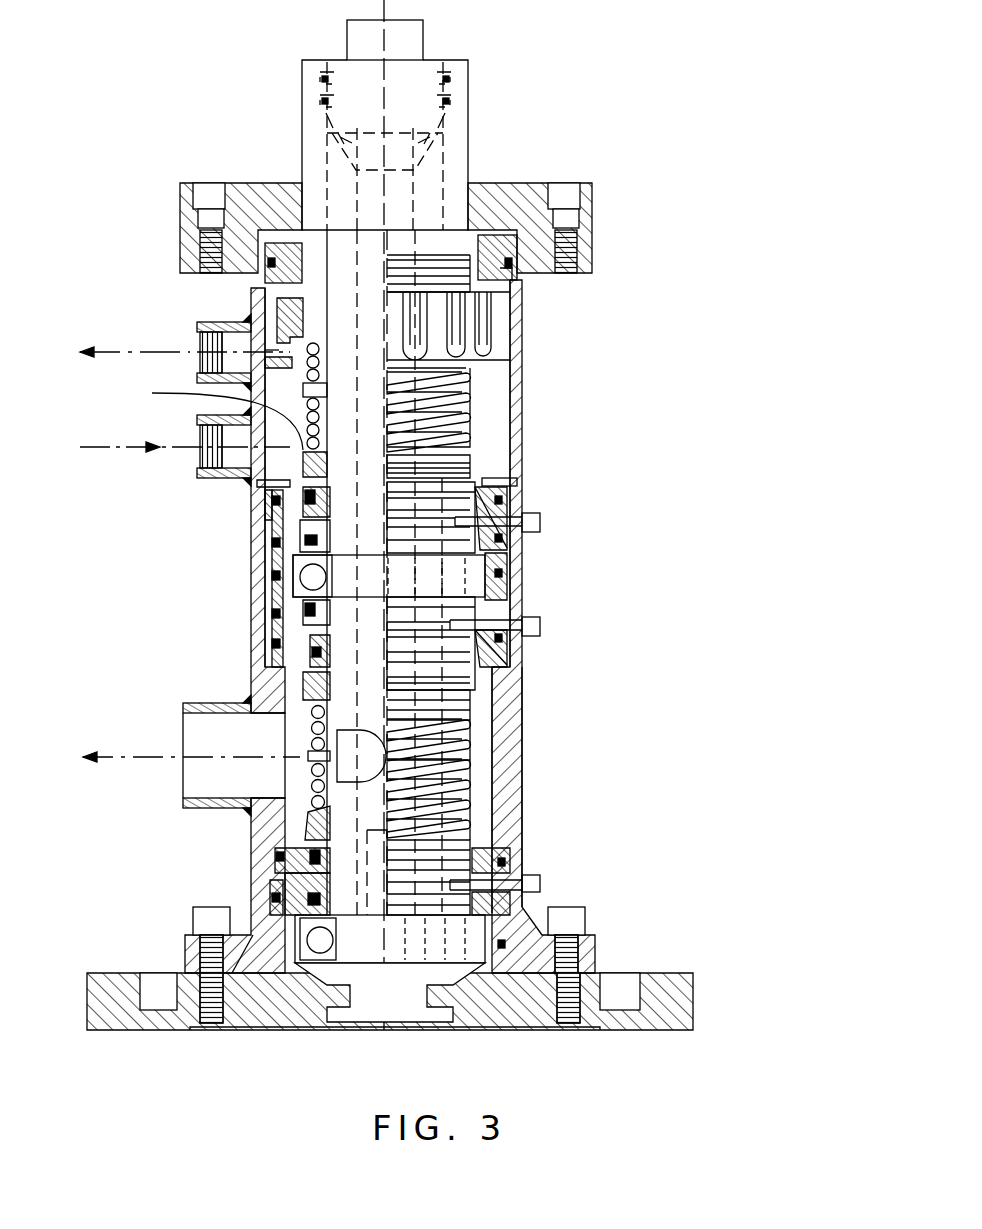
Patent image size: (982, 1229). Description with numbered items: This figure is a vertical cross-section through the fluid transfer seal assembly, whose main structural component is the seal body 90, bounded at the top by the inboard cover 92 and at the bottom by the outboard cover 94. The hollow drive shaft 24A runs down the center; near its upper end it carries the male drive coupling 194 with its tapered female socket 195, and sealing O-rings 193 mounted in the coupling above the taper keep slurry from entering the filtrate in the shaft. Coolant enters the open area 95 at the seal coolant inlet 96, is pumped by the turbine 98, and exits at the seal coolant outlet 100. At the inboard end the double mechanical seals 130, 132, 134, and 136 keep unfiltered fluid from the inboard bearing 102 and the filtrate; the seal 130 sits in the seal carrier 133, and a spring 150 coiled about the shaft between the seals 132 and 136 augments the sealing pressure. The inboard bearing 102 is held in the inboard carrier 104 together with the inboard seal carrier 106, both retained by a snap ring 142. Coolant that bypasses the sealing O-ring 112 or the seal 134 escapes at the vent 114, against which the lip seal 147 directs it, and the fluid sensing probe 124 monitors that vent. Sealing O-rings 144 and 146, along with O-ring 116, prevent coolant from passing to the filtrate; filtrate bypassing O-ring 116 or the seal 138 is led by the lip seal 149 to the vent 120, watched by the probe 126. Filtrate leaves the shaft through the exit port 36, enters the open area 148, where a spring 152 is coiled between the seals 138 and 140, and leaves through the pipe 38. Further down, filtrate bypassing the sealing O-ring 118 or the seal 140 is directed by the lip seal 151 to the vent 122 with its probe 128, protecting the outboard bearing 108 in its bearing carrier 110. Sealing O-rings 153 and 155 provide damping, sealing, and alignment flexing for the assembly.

The drive shaft 24A is at (302, 140).
The sealing O-rings 193 is at (449, 77).
The drive coupling 194 is at (449, 100).
The tapered female socket 195 is at (427, 150).
The inboard cover 92 is at (527, 180).
The mechanical seal 130 is at (300, 285).
The mechanical seal 132 is at (300, 297).
The seal carrier 133 is at (520, 278).
The sealing O-ring 153 is at (525, 270).
The mechanical seal 136 is at (215, 410).
The seal coolant outlet 100 is at (197, 362).
The seal coolant inlet 96 is at (197, 467).
The pipe 38 is at (205, 808).
The exit port 36 is at (350, 783).
The turbine 98 is at (512, 340).
The spring 150 is at (445, 420).
The open area 95 is at (497, 400).
The sealing O-ring 112 is at (510, 485).
The vent 114 is at (510, 510).
The sealing O-ring 144 is at (510, 545).
The fluid sensing probe 124 is at (540, 525).
The inboard seal carrier 106 is at (522, 535).
The inboard bearing 102 is at (310, 585).
The sealing O-ring 146 is at (510, 575).
The inboard carrier 104 is at (522, 607).
The fluid sensing probe 126 is at (540, 630).
The vent 120 is at (510, 645).
The sealing O-ring 116 is at (522, 650).
The snap ring 142 is at (253, 495).
The mechanical seal 134 is at (300, 525).
The lip seal 147 is at (300, 547).
The lip seal 149 is at (300, 615).
The mechanical seal 138 is at (307, 643).
The mechanical seal 140 is at (305, 842).
The lip seal 151 is at (305, 898).
The open area 148 is at (480, 762).
The spring 152 is at (460, 793).
The bearing carrier 110 is at (508, 872).
The sealing O-ring 118 is at (503, 868).
The fluid sensing probe 128 is at (541, 884).
The vent 122 is at (517, 897).
The sealing O-ring 155 is at (500, 948).
The outboard bearing 108 is at (318, 953).
The seal body 90 is at (524, 742).
The outboard cover 94 is at (597, 1028).